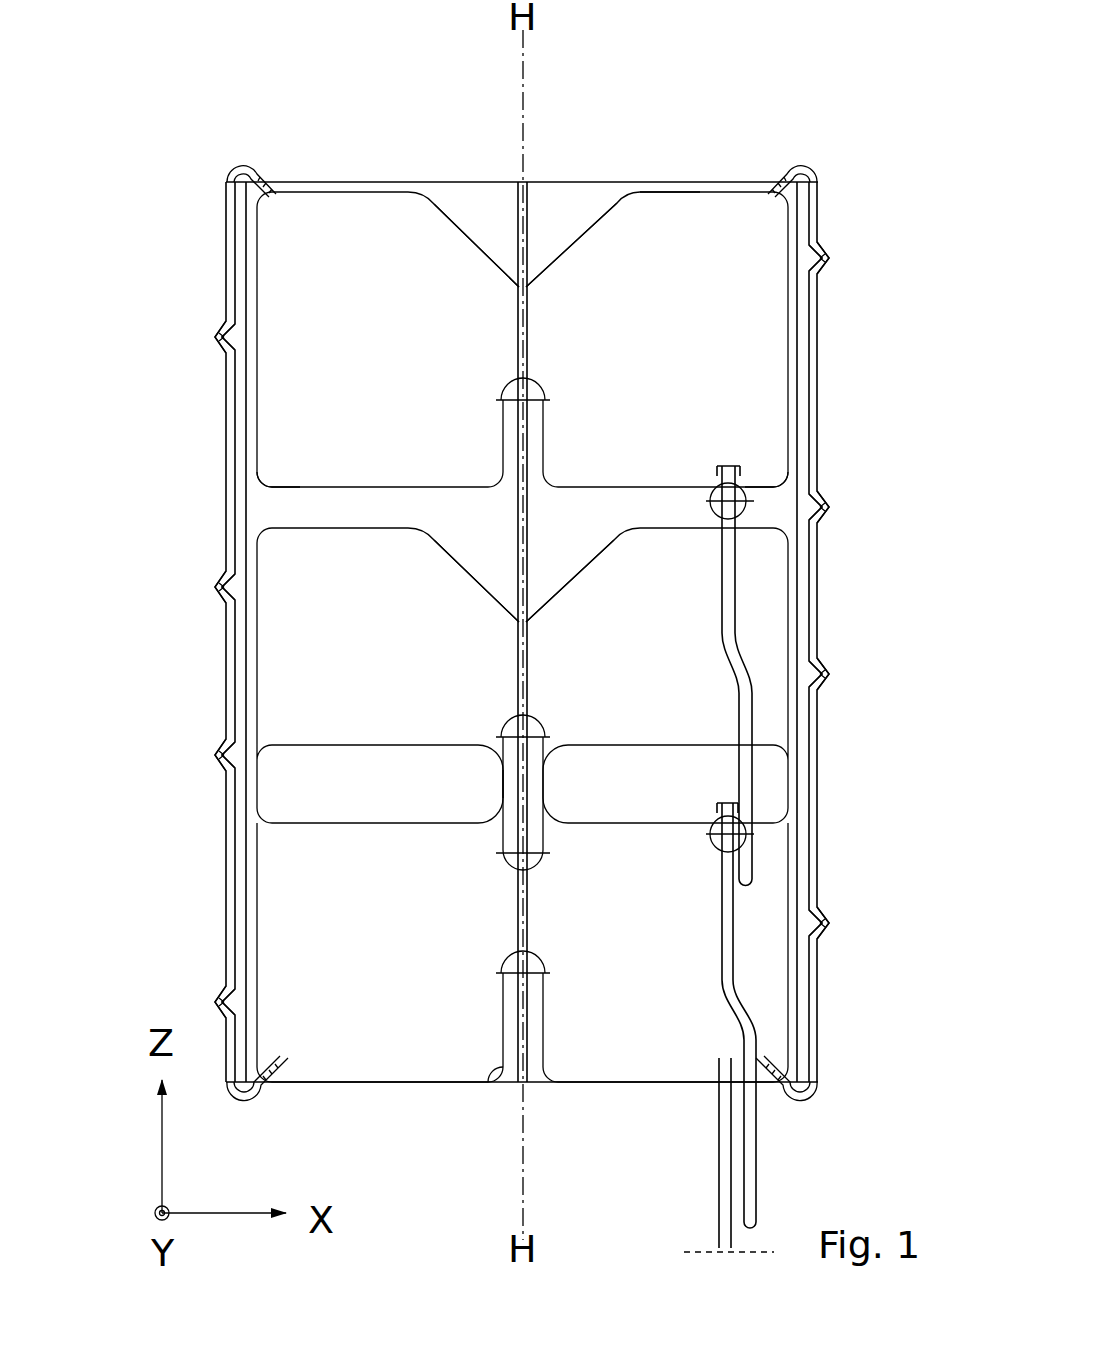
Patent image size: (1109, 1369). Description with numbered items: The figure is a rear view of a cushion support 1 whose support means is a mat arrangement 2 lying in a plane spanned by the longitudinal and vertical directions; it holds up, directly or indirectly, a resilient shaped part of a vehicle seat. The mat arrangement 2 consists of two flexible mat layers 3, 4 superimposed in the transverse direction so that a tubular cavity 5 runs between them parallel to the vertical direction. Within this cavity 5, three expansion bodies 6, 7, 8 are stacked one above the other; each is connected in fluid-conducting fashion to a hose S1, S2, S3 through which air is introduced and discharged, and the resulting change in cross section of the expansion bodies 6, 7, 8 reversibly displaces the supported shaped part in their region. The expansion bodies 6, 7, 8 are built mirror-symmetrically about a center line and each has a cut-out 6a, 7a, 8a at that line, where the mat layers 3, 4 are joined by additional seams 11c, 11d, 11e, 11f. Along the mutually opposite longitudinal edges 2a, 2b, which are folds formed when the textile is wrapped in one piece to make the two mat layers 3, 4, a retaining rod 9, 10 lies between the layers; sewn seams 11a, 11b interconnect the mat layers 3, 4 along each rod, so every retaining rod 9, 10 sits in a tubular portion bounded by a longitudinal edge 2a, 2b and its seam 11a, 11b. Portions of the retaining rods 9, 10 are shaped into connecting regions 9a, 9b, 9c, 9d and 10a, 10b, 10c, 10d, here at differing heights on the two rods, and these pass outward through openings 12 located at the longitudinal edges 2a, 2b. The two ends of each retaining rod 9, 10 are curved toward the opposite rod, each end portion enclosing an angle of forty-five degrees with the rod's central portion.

The cushion support 1 is at (764, 112).
The mat arrangement 2 is at (330, 112).
The longitudinal edge 2a is at (224, 478).
The longitudinal edge 2b is at (826, 402).
The mat layer 3 is at (606, 196).
The mat layer 4 is at (578, 216).
The tubular cavity 5 is at (472, 176).
The expansion body 6 is at (392, 972).
The cut-out 6a is at (494, 1022).
The expansion body 7 is at (392, 684).
The cut-out 7a is at (552, 732).
The expansion body 8 is at (398, 362).
The cut-out 8a is at (552, 442).
The retaining rod 9 is at (236, 166).
The connecting region 9a is at (216, 337).
The connecting region 9b is at (216, 587).
The connecting region 9c is at (216, 755).
The connecting region 9d is at (216, 1002).
The retaining rod 10 is at (813, 168).
The connecting region 10a is at (828, 258).
The connecting region 10b is at (828, 507).
The connecting region 10c is at (829, 674).
The connecting region 10d is at (829, 923).
The seam 11a is at (254, 512).
The seam 11b is at (790, 488).
The additional seam 11c is at (538, 1012).
The additional seam 11d is at (534, 796).
The additional seam 11e is at (537, 532).
The additional seam 11f is at (512, 230).
The opening 12 is at (208, 298).
The hose S1 is at (719, 1178).
The hose S2 is at (758, 1153).
The hose S3 is at (738, 640).